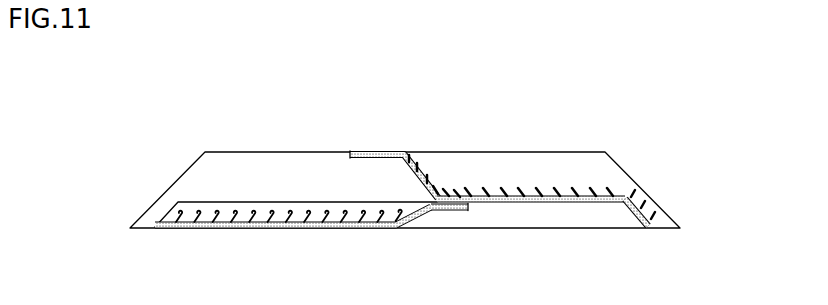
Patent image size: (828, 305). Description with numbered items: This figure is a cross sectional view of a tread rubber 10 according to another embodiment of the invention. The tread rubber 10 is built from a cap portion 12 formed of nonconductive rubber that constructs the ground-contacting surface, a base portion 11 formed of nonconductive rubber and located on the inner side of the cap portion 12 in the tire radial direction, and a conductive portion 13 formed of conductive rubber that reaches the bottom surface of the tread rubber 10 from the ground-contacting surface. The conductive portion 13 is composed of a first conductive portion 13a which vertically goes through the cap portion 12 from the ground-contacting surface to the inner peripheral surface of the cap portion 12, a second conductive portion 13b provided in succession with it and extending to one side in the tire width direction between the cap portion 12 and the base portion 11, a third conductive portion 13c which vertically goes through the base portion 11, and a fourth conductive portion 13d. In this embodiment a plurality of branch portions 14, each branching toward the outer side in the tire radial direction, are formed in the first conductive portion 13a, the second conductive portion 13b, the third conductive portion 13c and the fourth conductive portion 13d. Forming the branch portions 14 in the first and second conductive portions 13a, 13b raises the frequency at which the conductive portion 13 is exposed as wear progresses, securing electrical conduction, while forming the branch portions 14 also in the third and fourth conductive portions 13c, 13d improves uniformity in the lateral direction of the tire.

The tread rubber 10 is at (495, 152).
The base portion 11 is at (182, 203).
The cap portion 12 is at (207, 175).
The conductive portion 13 is at (626, 197).
The first conductive portion 13a is at (406, 179).
The second conductive portion 13b is at (568, 203).
The third conductive portion 13c is at (426, 212).
The fourth conductive portion 13d is at (281, 228).
The branch portions 14 is at (290, 222).